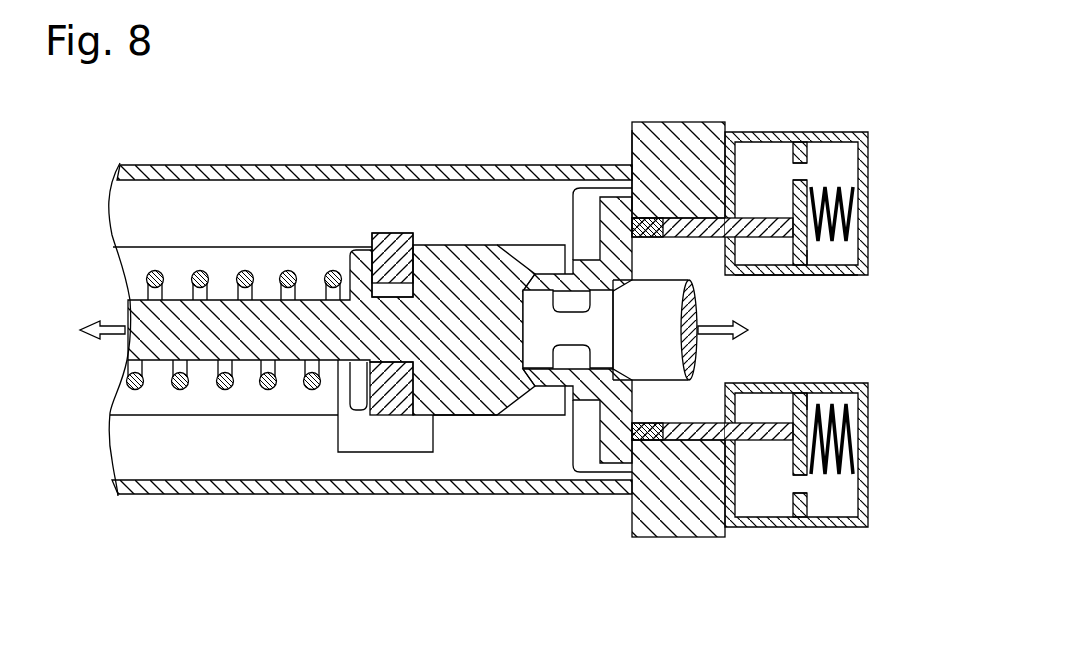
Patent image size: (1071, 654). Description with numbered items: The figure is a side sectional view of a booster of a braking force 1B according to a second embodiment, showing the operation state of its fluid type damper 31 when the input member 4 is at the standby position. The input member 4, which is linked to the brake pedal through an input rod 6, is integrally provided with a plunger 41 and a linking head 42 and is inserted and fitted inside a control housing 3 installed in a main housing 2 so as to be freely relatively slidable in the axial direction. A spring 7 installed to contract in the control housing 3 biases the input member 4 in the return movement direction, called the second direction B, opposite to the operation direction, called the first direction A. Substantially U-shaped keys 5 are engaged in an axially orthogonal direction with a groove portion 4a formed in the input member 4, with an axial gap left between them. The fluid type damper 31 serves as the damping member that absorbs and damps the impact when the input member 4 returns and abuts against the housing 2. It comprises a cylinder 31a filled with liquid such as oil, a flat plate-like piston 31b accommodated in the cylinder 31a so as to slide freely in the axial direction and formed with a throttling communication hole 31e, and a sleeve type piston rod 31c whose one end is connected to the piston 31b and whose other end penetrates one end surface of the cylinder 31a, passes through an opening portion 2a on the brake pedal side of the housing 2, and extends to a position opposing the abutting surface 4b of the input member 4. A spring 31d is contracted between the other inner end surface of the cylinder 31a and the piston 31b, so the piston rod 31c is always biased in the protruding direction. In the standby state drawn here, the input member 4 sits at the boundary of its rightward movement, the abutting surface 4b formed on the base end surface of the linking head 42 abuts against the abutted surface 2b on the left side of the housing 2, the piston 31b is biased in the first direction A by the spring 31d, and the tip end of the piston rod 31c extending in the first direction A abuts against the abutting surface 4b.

The booster of a braking force 1B is at (600, 61).
The main housing 2 is at (668, 150).
The opening portion 2a is at (710, 218).
The abutted surface 2b is at (632, 143).
The control housing 3 is at (365, 165).
The input member 4 is at (437, 245).
The groove portion 4a is at (377, 397).
The abutting surface 4b is at (633, 259).
The plunger 41 is at (268, 300).
The linking head 42 is at (478, 248).
The key 5 is at (390, 233).
The input rod 6 is at (688, 360).
The spring 7 is at (172, 388).
The fluid type damper 31 is at (845, 128).
The cylinder 31a is at (830, 275).
The piston 31b is at (810, 252).
The piston rod 31c is at (762, 218).
The spring 31d is at (857, 192).
The throttling communication hole 31e is at (803, 175).
The first direction A is at (98, 302).
The second direction B is at (740, 313).